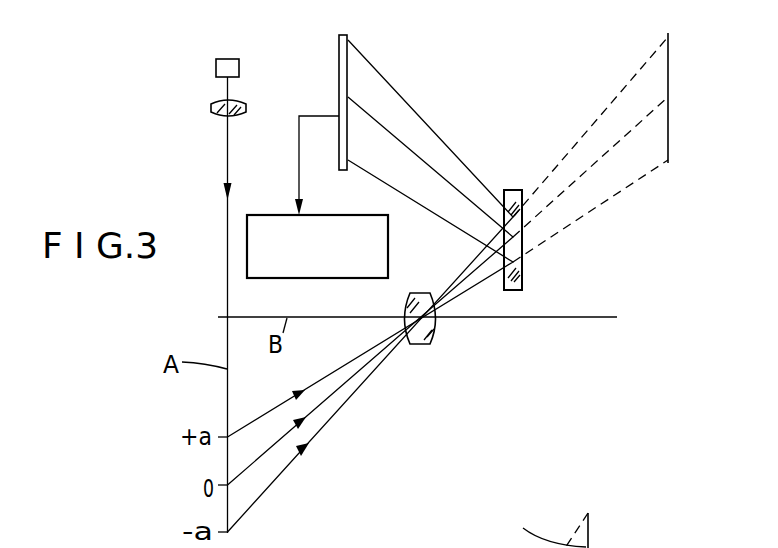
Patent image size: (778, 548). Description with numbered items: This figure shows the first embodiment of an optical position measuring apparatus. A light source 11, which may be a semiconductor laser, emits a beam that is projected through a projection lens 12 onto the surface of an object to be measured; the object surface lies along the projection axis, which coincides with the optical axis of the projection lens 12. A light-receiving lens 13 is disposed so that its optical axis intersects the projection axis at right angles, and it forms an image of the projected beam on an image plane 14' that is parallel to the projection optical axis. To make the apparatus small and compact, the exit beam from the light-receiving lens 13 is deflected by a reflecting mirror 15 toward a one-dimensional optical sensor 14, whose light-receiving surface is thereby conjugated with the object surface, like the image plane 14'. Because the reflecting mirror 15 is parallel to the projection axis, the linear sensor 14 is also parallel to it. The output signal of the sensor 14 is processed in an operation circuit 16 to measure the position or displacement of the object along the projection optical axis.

The light source 11 is at (215, 64).
The projection lens 12 is at (212, 105).
The light-receiving lens 13 is at (428, 345).
The one-dimensional optical sensor 14 is at (354, 95).
The image plane 14' is at (603, 284).
The reflecting mirror 15 is at (523, 272).
The operation circuit 16 is at (365, 214).